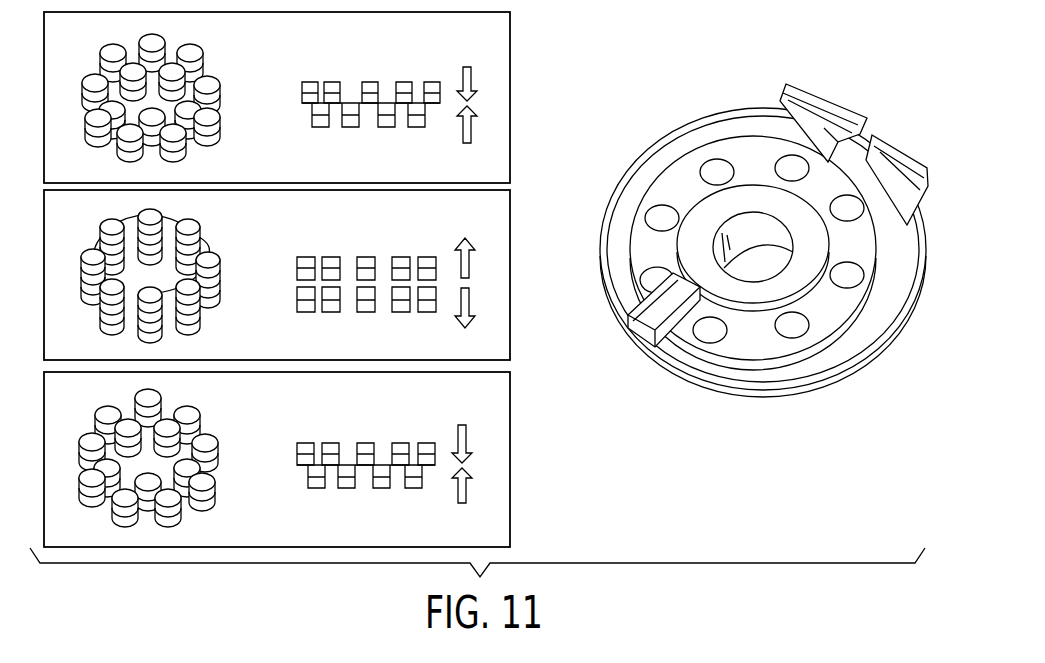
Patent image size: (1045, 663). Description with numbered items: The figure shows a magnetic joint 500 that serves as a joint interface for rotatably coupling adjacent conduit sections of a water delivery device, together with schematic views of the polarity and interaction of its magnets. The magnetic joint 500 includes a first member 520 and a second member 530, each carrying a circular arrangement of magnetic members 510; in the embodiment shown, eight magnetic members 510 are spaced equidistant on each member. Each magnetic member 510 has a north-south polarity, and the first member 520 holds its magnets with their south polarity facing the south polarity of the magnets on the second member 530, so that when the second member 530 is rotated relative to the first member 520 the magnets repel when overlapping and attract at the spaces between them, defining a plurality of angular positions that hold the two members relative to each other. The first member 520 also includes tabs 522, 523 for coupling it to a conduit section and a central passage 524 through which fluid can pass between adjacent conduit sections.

The magnetic joint 500 is at (655, 59).
The magnetic members 510 is at (213, 78).
The first member 520 is at (286, 93).
The tab 522 is at (815, 90).
The tab 523 is at (650, 305).
The central passage 524 is at (749, 196).
The second member 530 is at (303, 115).